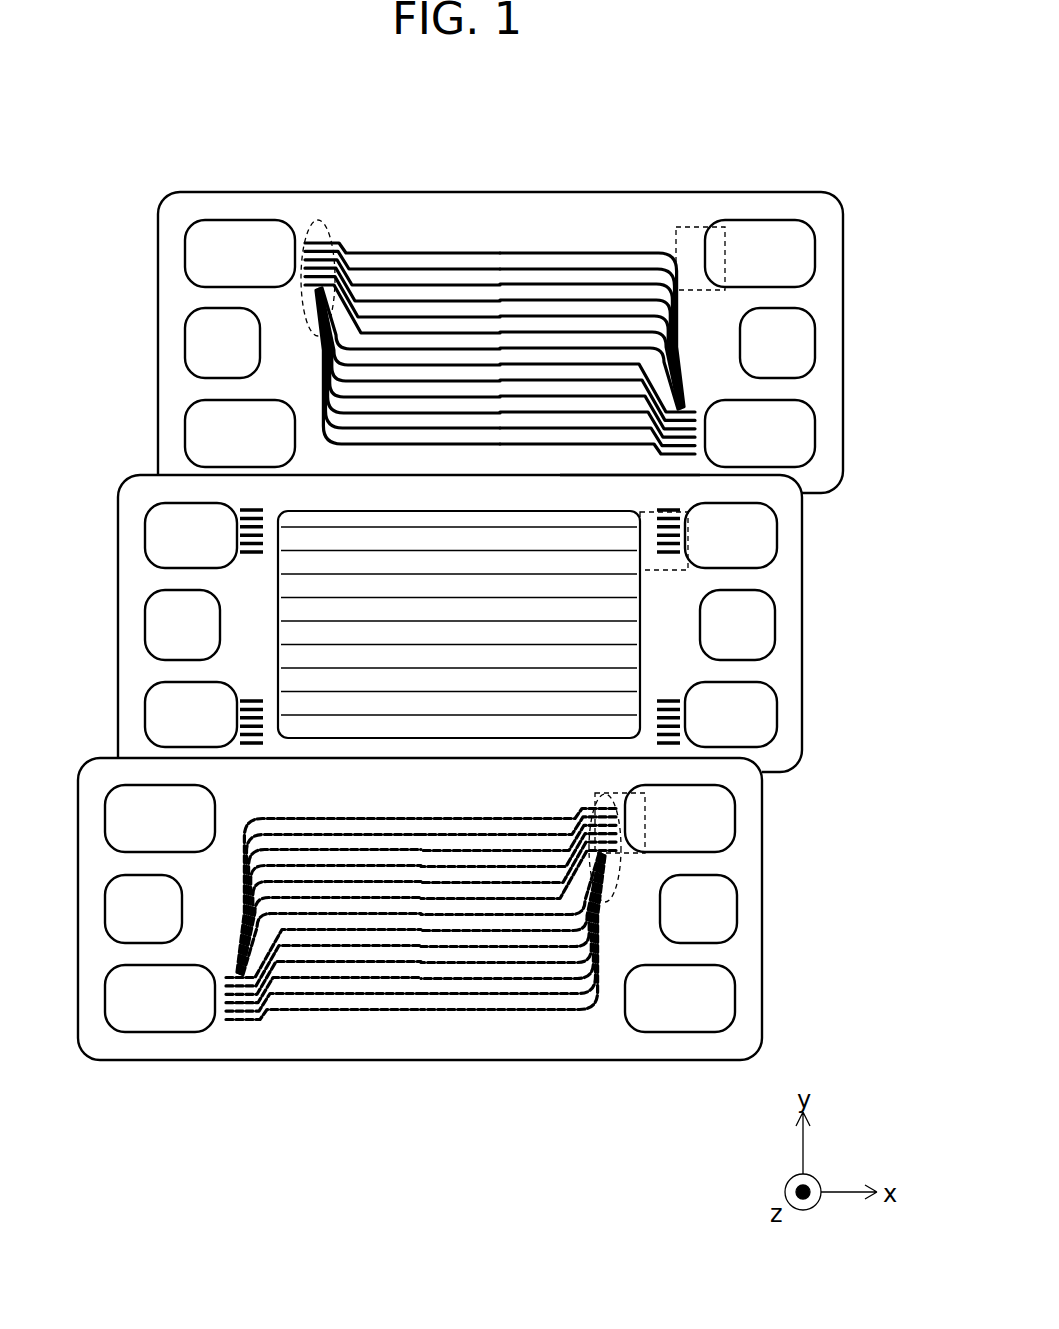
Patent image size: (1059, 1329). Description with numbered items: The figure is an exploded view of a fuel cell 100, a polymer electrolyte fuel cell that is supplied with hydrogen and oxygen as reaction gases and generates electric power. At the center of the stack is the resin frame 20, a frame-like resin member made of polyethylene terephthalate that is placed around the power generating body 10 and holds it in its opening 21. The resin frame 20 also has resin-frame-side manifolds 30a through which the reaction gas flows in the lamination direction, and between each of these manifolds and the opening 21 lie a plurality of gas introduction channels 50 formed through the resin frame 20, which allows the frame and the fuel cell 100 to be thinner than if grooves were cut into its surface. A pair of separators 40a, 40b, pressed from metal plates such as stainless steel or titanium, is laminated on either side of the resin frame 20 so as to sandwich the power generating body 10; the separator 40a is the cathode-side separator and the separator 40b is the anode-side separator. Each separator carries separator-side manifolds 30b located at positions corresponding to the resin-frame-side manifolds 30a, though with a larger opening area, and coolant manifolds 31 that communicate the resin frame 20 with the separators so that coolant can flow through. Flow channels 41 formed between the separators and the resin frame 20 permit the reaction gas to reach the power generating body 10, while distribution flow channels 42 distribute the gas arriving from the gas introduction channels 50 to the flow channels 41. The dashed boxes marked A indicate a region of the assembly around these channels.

The fuel cell 100 is at (464, 619).
The power generating body 10 is at (514, 546).
The resin frame 20 is at (803, 660).
The opening 21 is at (592, 505).
The resin-frame-side manifolds 30a is at (143, 538).
The separator-side manifolds 30b is at (183, 258).
The coolant manifolds 31 is at (183, 348).
The separator 40a is at (714, 1060).
The separator 40b is at (845, 220).
The flow channels 41 is at (528, 221).
The distribution flow channels 42 is at (317, 220).
The gas introduction channels 50 is at (245, 510).
The region A is at (705, 290).